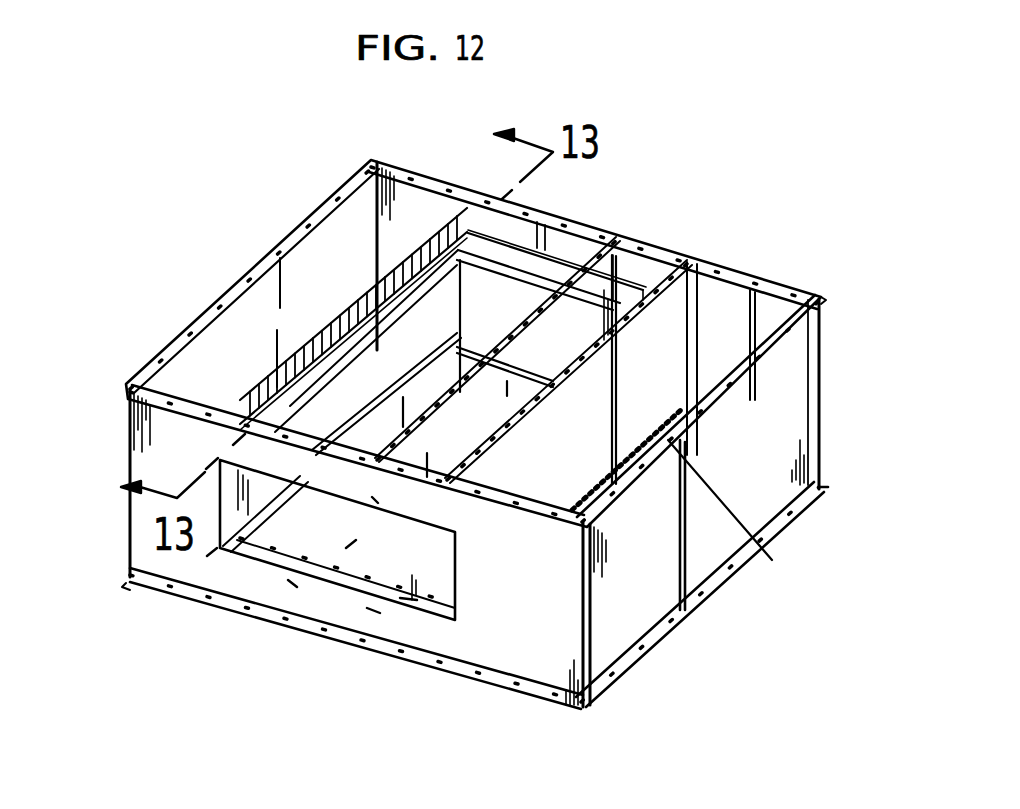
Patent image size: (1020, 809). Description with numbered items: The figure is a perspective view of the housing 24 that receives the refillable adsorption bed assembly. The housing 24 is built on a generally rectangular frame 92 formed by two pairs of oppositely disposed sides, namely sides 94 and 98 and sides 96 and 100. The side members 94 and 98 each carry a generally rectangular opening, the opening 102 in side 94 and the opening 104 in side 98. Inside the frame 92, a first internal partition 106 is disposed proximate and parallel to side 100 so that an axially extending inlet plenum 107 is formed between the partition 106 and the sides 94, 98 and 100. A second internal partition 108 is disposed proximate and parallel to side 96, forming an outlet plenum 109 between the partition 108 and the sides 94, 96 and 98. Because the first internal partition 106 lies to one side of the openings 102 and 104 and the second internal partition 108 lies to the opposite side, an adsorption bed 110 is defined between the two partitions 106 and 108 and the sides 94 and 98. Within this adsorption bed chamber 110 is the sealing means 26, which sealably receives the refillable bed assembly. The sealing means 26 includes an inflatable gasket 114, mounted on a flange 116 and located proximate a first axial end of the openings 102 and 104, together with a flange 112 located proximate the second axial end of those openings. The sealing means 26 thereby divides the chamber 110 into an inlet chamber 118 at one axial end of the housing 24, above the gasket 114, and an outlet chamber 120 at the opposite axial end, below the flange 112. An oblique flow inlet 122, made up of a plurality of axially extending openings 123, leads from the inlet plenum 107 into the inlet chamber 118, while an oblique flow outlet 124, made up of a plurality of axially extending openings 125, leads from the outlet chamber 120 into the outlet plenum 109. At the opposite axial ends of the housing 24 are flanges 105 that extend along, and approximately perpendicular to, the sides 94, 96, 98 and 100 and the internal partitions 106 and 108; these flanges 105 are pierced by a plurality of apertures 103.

The housing 24 is at (216, 168).
The sealing means 26 is at (548, 320).
The frame 92 is at (774, 369).
The side 94 is at (513, 647).
The side 96 is at (763, 498).
The side 98 is at (735, 272).
The side 100 is at (130, 378).
The opening 102 is at (277, 527).
The apertures 103 is at (805, 492).
The opening 104 is at (567, 285).
The flanges 105 is at (727, 382).
The first internal partition 106 is at (402, 243).
The inlet plenum 107 is at (249, 323).
The second internal partition 108 is at (525, 406).
The outlet plenum 109 is at (700, 313).
The adsorption bed 110 is at (425, 450).
The flange 112 is at (250, 528).
The inflatable gasket 114 is at (443, 232).
The flange 116 is at (257, 358).
The inlet chamber 118 is at (572, 250).
The outlet chamber 120 is at (377, 540).
The oblique flow inlet 122 is at (364, 283).
The openings 123 is at (290, 388).
The oblique flow outlet 124 is at (739, 515).
The openings 125 is at (617, 490).